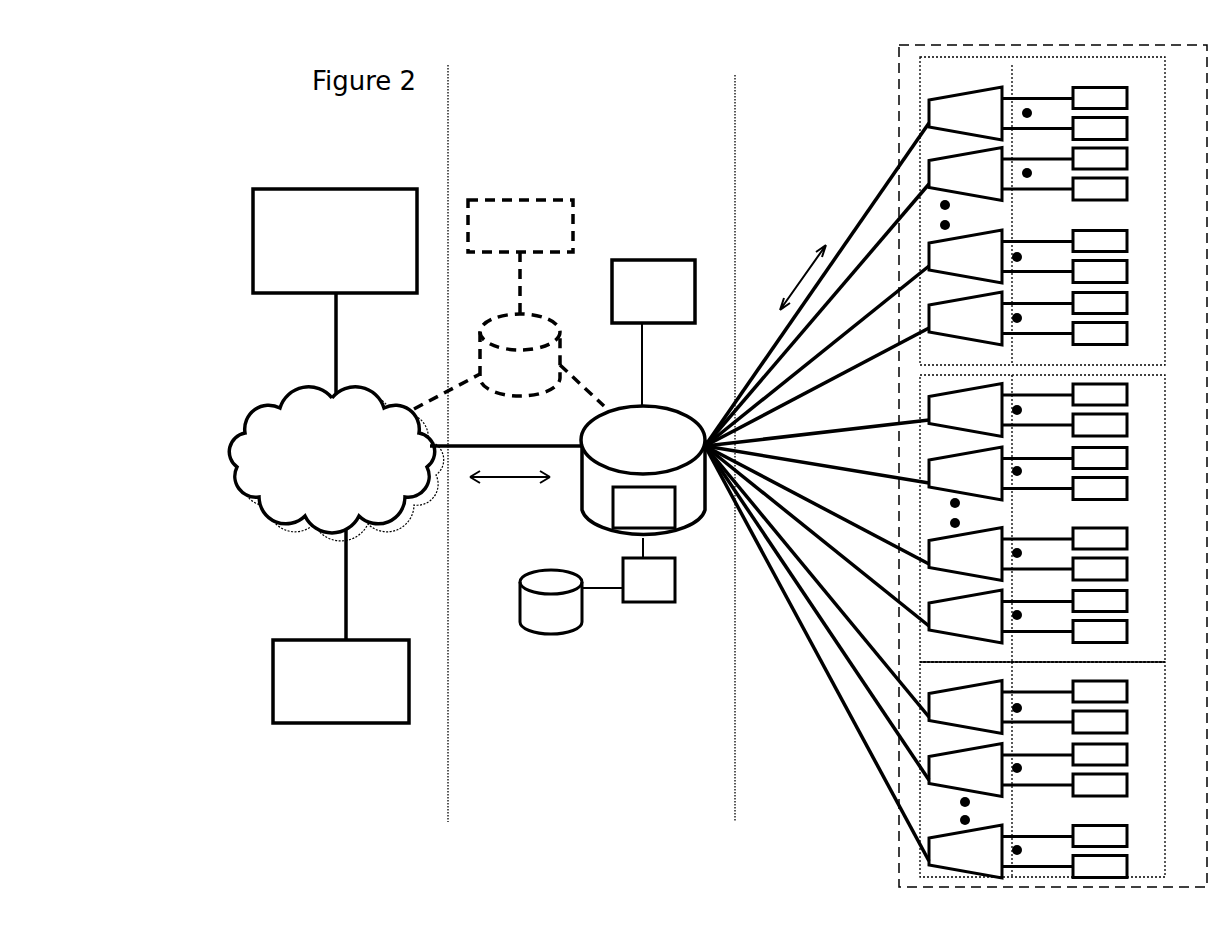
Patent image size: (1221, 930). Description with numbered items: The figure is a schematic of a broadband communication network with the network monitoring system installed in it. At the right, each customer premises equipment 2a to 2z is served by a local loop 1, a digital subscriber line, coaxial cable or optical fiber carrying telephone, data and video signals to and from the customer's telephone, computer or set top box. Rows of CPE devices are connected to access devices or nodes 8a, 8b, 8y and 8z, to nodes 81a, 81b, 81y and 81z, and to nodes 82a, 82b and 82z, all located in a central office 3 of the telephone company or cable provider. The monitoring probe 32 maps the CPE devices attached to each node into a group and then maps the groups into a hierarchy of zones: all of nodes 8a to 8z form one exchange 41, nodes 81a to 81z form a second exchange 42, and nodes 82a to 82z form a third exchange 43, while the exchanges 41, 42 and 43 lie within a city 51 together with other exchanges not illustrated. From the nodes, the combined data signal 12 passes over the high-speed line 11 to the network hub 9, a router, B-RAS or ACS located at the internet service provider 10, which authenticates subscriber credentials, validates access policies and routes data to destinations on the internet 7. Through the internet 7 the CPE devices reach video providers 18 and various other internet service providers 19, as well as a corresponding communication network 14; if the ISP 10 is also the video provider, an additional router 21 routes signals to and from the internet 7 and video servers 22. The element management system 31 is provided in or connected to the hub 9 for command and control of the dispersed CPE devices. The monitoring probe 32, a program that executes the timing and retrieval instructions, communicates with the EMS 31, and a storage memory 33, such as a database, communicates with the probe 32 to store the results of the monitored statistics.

The local loop 1 is at (1063, 93).
The customer premises equipment 2a is at (1100, 468).
The customer premises equipment 2z is at (1100, 498).
The central office 3 is at (817, 445).
The internet 7 is at (336, 464).
The access device or node 8a is at (965, 113).
The access device or node 8b is at (965, 174).
The access device or node 8y is at (965, 256).
The access device or node 8z is at (965, 318).
The network hub 9 is at (643, 470).
The internet service provider 10 is at (591, 445).
The high-speed line 11 is at (858, 222).
The combined data signal 12 is at (796, 276).
The communication network 14 is at (653, 291).
The video providers 18 is at (335, 241).
The internet service providers 19 is at (341, 681).
The additional router 21 is at (520, 355).
The video servers 22 is at (520, 226).
The element management system 31 is at (644, 507).
The monitoring probe 32 is at (649, 580).
The storage memory 33 is at (551, 602).
The exchange 41 is at (1042, 211).
The exchange 42 is at (1042, 518).
The exchange 43 is at (1042, 769).
The city 51 is at (1053, 466).
The access device or node 81a is at (965, 410).
The access device or node 81b is at (965, 473).
The access device or node 81y is at (965, 554).
The access device or node 81z is at (965, 616).
The access device or node 82a is at (965, 707).
The access device or node 82b is at (965, 770).
The access device or node 82z is at (965, 851).